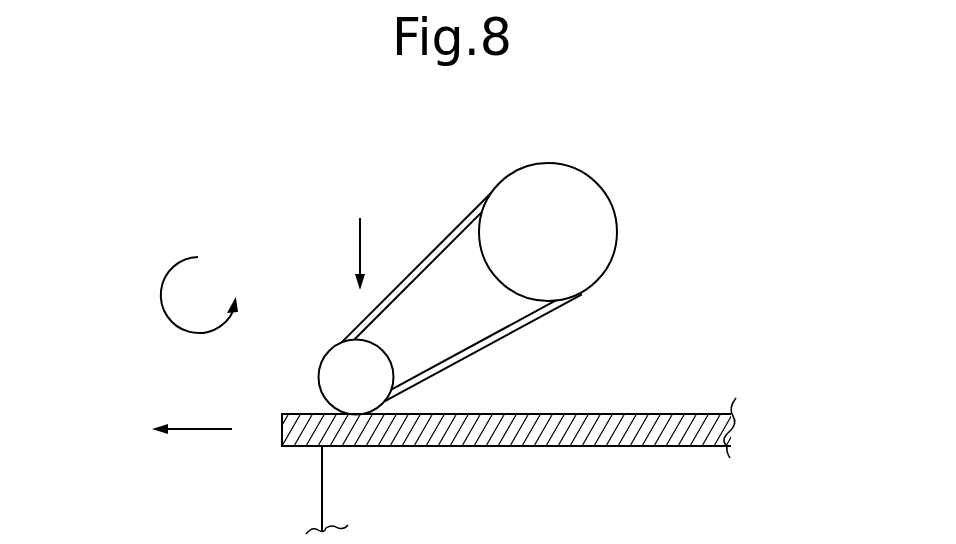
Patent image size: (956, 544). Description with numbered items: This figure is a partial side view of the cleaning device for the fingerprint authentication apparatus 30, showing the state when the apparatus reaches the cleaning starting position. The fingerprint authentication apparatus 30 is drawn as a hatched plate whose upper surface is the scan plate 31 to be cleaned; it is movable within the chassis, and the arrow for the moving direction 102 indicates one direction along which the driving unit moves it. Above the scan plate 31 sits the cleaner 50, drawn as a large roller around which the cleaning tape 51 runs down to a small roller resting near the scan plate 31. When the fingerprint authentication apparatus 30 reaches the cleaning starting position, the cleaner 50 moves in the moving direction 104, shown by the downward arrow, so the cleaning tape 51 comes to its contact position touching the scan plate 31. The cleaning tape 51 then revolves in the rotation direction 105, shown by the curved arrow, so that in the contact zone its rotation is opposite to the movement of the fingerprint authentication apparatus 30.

The fingerprint authentication apparatus 30 is at (336, 500).
The scan plate 31 is at (688, 413).
The cleaner 50 is at (619, 223).
The cleaning tape 51 is at (486, 341).
The moving direction 102 is at (198, 432).
The moving direction 104 is at (364, 240).
The rotation direction 105 is at (160, 287).